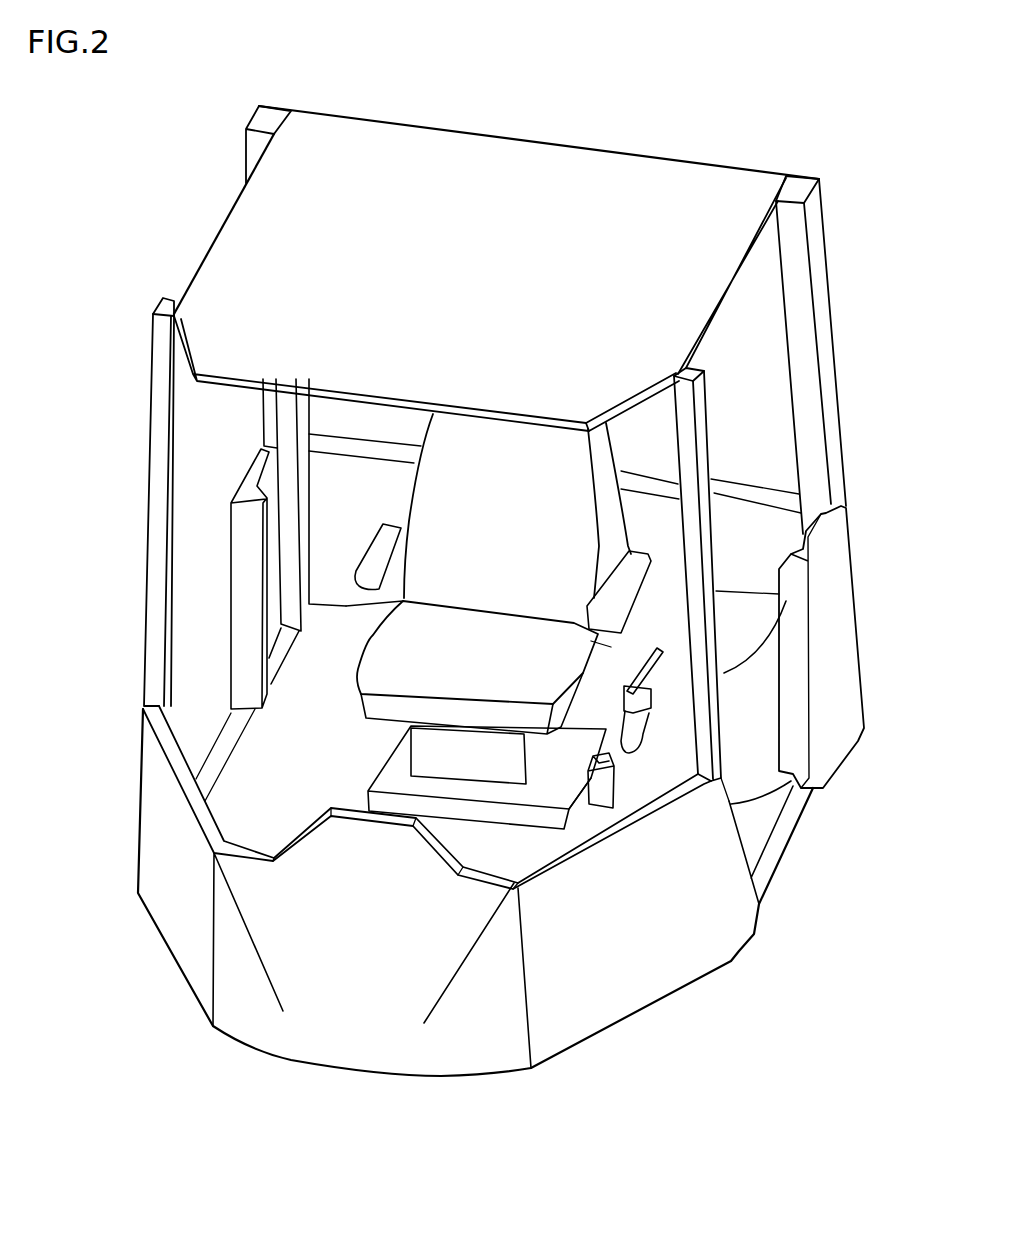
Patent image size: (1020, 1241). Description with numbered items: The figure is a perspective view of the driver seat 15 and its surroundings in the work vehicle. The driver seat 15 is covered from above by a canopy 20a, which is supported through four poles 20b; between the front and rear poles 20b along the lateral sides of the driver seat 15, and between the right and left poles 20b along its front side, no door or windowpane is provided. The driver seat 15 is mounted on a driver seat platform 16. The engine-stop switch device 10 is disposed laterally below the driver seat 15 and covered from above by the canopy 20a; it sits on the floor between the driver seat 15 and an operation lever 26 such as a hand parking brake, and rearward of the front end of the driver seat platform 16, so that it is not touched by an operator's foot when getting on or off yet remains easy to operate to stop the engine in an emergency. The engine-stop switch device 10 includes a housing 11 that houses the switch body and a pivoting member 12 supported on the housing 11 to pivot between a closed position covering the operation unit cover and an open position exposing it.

The engine-stop switch device 10 is at (611, 816).
The housing 11 is at (612, 758).
The pivoting member 12 is at (598, 804).
The driver seat 15 is at (447, 507).
The driver seat platform 16 is at (543, 825).
The canopy 20a is at (528, 170).
The pole 20b is at (277, 405).
The operation lever 26 is at (642, 735).